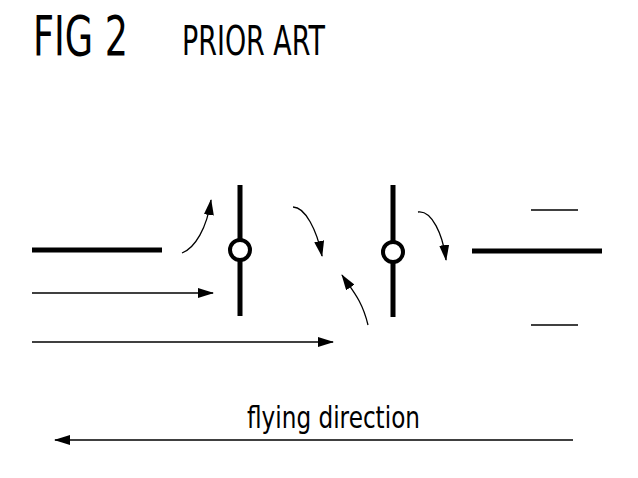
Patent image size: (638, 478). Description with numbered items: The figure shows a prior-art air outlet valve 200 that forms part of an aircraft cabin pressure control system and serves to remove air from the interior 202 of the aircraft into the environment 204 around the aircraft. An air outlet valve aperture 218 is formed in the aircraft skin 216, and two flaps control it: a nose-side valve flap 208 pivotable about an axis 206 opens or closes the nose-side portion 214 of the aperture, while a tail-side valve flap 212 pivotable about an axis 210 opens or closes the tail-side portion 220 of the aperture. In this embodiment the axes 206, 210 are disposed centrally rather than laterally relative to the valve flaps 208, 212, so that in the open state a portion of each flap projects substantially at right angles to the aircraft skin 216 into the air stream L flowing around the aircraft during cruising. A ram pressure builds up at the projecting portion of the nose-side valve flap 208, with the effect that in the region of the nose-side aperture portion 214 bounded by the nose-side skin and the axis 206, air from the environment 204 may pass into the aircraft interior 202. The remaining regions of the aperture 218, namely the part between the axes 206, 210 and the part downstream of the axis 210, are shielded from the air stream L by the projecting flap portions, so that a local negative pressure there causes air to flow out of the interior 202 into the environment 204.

The air outlet valve 200 is at (490, 142).
The interior of the aircraft 202 is at (554, 193).
The environment around the aircraft 204 is at (554, 308).
The axis 206 is at (250, 255).
The nose-side valve flap 208 is at (238, 196).
The axis 210 is at (403, 257).
The tail-side valve flap 212 is at (392, 196).
The nose-side portion of the air outlet valve aperture 214 is at (262, 226).
The aircraft skin 216 is at (75, 248).
The air outlet valve aperture 218 is at (367, 320).
The tail-side portion of the air outlet valve aperture 220 is at (410, 227).
The air stream L is at (127, 343).